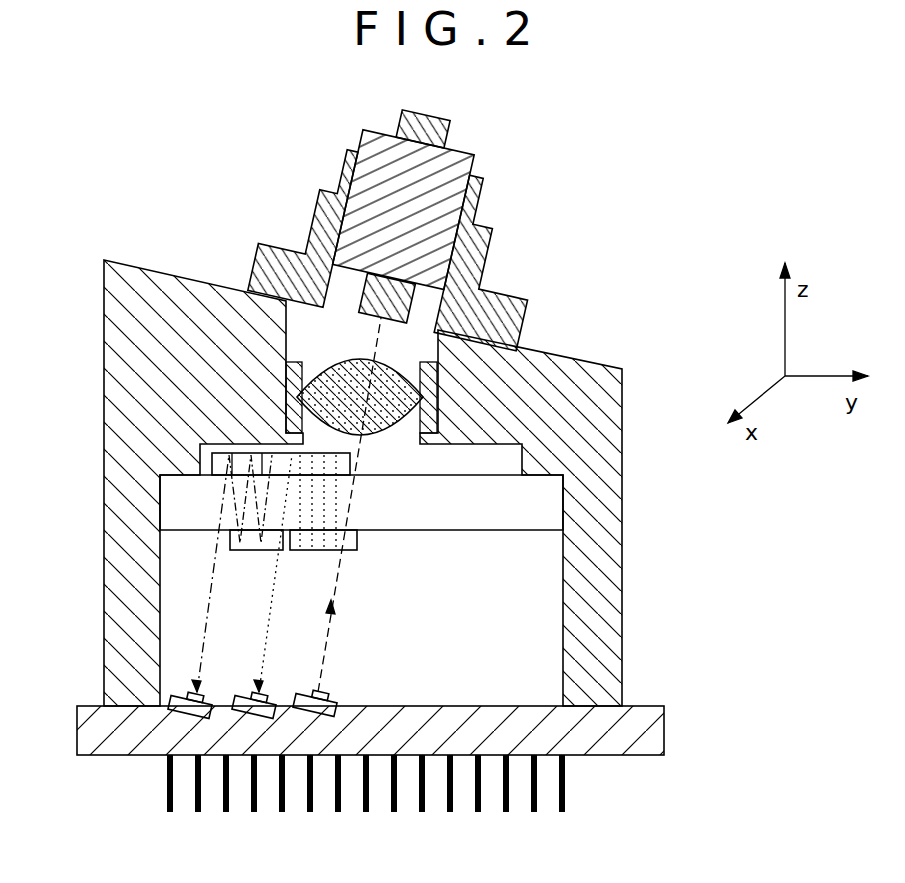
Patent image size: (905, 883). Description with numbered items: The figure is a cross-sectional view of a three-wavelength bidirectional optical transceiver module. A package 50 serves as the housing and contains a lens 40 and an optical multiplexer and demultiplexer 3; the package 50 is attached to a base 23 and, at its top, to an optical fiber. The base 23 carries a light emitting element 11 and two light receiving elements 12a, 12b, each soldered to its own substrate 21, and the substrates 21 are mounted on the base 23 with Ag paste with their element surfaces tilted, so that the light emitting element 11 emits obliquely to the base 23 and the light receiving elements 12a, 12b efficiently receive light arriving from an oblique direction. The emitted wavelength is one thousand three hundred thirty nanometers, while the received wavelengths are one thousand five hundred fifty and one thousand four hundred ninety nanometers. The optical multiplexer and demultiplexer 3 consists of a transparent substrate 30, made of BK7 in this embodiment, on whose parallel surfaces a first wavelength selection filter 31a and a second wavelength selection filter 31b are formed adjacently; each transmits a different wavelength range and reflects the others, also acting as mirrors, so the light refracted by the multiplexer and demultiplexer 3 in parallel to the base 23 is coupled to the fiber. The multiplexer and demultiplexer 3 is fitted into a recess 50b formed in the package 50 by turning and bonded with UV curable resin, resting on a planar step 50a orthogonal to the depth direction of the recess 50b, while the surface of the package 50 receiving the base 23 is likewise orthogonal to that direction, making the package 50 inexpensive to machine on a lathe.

The optical multiplexer and demultiplexer 3 is at (365, 570).
The light emitting element 11 is at (327, 683).
The light receiving element 12a is at (263, 690).
The light receiving element 12b is at (218, 683).
The substrate 21 is at (180, 713).
The base 23 is at (605, 737).
The transparent substrate 30 is at (527, 508).
The first wavelength selection filter 31a is at (362, 540).
The second wavelength selection filter 31b is at (233, 543).
The lens 40 is at (407, 361).
The package 50 is at (409, 483).
The planar step 50a is at (563, 473).
The recess 50b is at (537, 648).